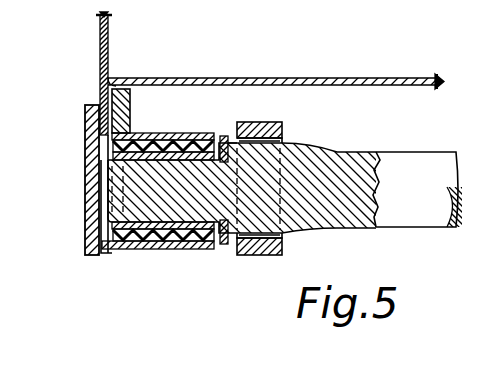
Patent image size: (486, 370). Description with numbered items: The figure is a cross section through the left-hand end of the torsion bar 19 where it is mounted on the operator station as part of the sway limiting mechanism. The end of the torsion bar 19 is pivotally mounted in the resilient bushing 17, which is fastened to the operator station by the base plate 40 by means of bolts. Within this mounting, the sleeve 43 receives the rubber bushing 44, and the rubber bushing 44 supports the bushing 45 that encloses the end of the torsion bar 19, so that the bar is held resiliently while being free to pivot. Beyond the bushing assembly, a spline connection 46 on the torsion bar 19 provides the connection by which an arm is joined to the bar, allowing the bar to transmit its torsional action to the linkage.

The base plate 40 is at (95, 207).
The resilient bushing 17 is at (180, 129).
The torsion bar 19 is at (418, 152).
The sleeve 43 is at (170, 248).
The rubber bushing 44 is at (150, 248).
The bushing 45 is at (213, 250).
The spline connection 46 is at (285, 139).